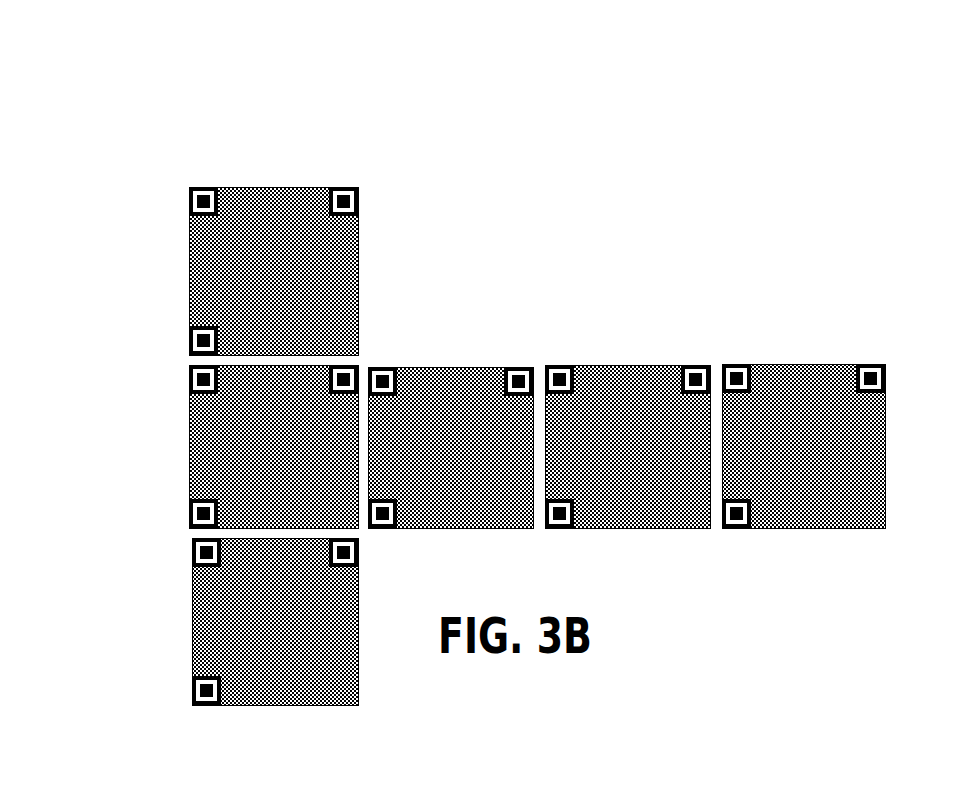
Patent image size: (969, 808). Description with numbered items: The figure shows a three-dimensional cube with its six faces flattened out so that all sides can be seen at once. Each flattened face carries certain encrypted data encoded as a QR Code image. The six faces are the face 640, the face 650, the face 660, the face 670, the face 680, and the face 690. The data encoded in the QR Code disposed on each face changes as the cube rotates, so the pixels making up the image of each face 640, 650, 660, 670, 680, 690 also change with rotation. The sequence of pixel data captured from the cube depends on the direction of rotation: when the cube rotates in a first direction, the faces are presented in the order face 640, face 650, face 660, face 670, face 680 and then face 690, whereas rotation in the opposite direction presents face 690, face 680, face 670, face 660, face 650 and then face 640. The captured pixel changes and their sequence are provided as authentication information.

The face 640 is at (362, 162).
The face 650 is at (177, 420).
The face 660 is at (177, 585).
The face 670 is at (453, 355).
The face 680 is at (605, 358).
The face 690 is at (787, 357).